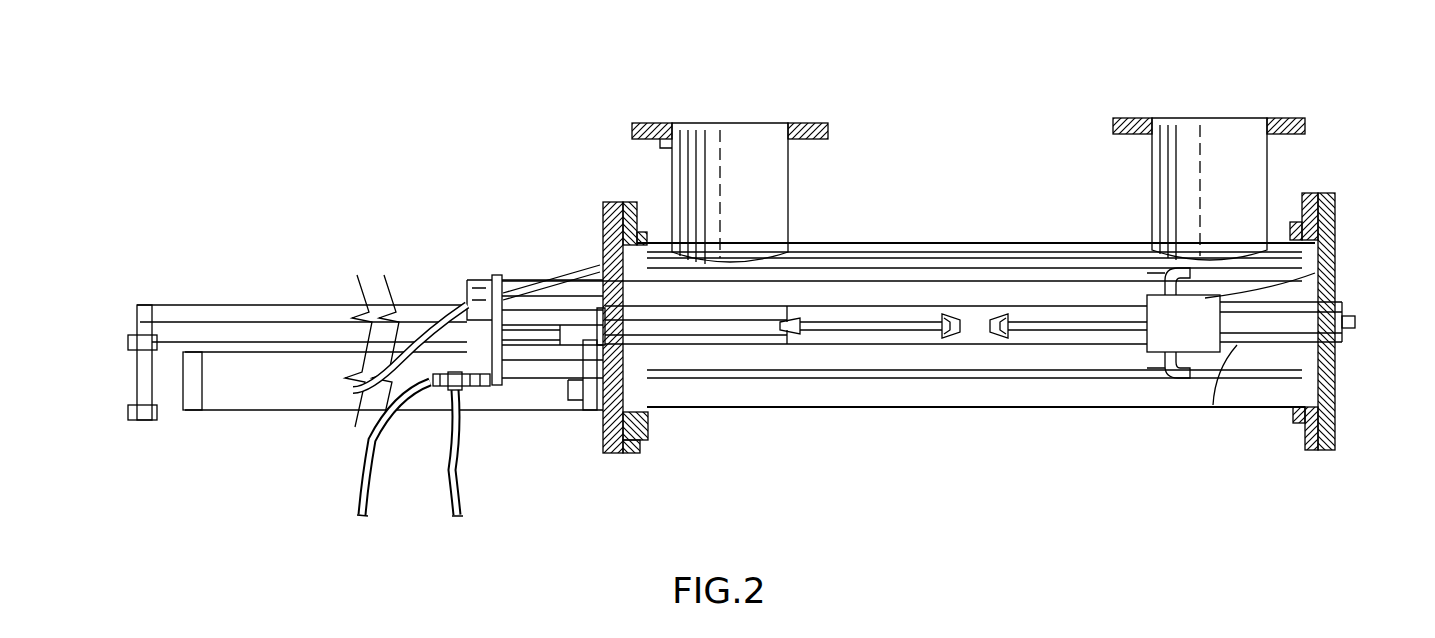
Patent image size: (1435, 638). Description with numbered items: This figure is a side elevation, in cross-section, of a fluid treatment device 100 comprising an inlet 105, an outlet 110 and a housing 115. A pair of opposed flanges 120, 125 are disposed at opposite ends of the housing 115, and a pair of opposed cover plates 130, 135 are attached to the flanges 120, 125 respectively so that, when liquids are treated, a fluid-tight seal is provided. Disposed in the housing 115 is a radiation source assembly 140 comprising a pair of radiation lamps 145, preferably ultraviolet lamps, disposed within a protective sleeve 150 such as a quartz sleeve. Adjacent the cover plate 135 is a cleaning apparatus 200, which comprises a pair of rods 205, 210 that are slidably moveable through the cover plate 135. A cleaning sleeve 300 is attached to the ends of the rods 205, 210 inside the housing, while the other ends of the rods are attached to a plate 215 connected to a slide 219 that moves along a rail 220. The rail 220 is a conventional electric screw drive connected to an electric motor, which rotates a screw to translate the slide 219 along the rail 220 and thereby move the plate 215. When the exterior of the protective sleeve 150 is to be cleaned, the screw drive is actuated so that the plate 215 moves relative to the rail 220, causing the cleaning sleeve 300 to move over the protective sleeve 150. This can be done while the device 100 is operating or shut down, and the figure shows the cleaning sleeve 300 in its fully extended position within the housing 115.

The fluid treatment device 100 is at (1032, 185).
The inlet 105 is at (655, 125).
The outlet 110 is at (1286, 118).
The housing 115 is at (982, 408).
The flange 120 is at (1297, 432).
The flange 125 is at (642, 440).
The cover plate 130 is at (1338, 387).
The cover plate 135 is at (603, 222).
The radiation source assembly 140 is at (1213, 405).
The radiation lamps 145 is at (1030, 302).
The protective sleeve 150 is at (968, 217).
The cleaning apparatus 200 is at (488, 425).
The rod 205 is at (525, 280).
The rod 210 is at (563, 387).
The plate 215 is at (498, 278).
The slide 219 is at (522, 350).
The rail 220 is at (230, 348).
The cleaning sleeve 300 is at (1335, 273).